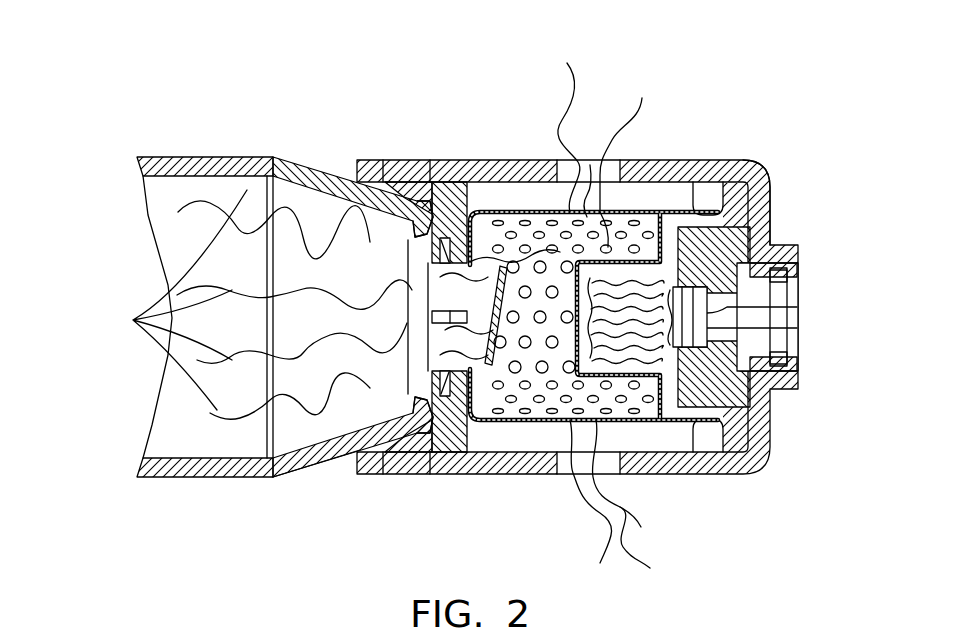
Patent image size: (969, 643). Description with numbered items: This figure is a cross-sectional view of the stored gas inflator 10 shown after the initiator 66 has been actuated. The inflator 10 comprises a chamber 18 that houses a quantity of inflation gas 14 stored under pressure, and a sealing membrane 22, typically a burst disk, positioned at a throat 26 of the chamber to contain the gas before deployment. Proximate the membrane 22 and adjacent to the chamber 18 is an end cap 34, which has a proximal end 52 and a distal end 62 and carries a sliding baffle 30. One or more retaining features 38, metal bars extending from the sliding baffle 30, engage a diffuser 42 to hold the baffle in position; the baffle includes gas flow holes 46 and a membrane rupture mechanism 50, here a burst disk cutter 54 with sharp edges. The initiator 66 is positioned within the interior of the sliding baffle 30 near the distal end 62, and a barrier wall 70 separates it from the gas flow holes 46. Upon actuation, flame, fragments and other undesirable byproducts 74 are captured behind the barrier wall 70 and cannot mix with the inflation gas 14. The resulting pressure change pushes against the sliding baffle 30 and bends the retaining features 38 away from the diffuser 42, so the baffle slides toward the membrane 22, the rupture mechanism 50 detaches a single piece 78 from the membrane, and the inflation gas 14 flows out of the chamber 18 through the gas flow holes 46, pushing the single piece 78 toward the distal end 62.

The inflator 10 is at (144, 152).
The inflation gas 14 is at (133, 320).
The chamber 18 is at (225, 157).
The sealing membrane 22 is at (383, 160).
The throat 26 is at (282, 157).
The sliding baffle 30 is at (503, 265).
The end cap 34 is at (772, 461).
The retaining feature 38 is at (469, 212).
The diffuser 42 is at (447, 183).
The gas flow holes 46 is at (527, 289).
The membrane rupture mechanism 50 is at (299, 294).
The burst disk cutter 54 is at (415, 268).
The proximal end 52 is at (400, 460).
The distal end 62 is at (770, 195).
The initiator 66 is at (693, 275).
The barrier wall 70 is at (553, 289).
The undesirable byproducts 74 is at (697, 353).
The single piece 78 is at (395, 355).